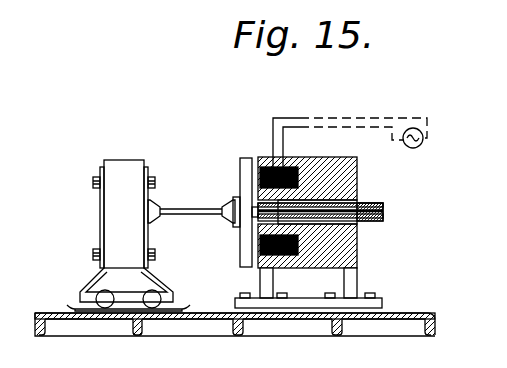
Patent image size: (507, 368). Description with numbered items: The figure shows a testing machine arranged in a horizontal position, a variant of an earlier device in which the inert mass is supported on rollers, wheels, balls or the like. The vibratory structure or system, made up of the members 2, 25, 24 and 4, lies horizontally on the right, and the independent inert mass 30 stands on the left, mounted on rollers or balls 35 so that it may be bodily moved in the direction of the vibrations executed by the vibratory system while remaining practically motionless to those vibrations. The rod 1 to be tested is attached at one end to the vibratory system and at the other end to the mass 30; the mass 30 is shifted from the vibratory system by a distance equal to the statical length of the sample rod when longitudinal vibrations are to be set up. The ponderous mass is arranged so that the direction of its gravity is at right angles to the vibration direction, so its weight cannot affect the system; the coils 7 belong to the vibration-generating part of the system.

The independent inert mass 30 is at (128, 170).
The rollers or balls 35 is at (93, 292).
The rod to be tested 1 is at (192, 217).
The vibratory system member 4 is at (243, 237).
The vibratory system member 2 is at (357, 177).
The coils 7 is at (290, 170).
The vibratory system member 24 is at (358, 223).
The vibratory system member 25 is at (372, 222).